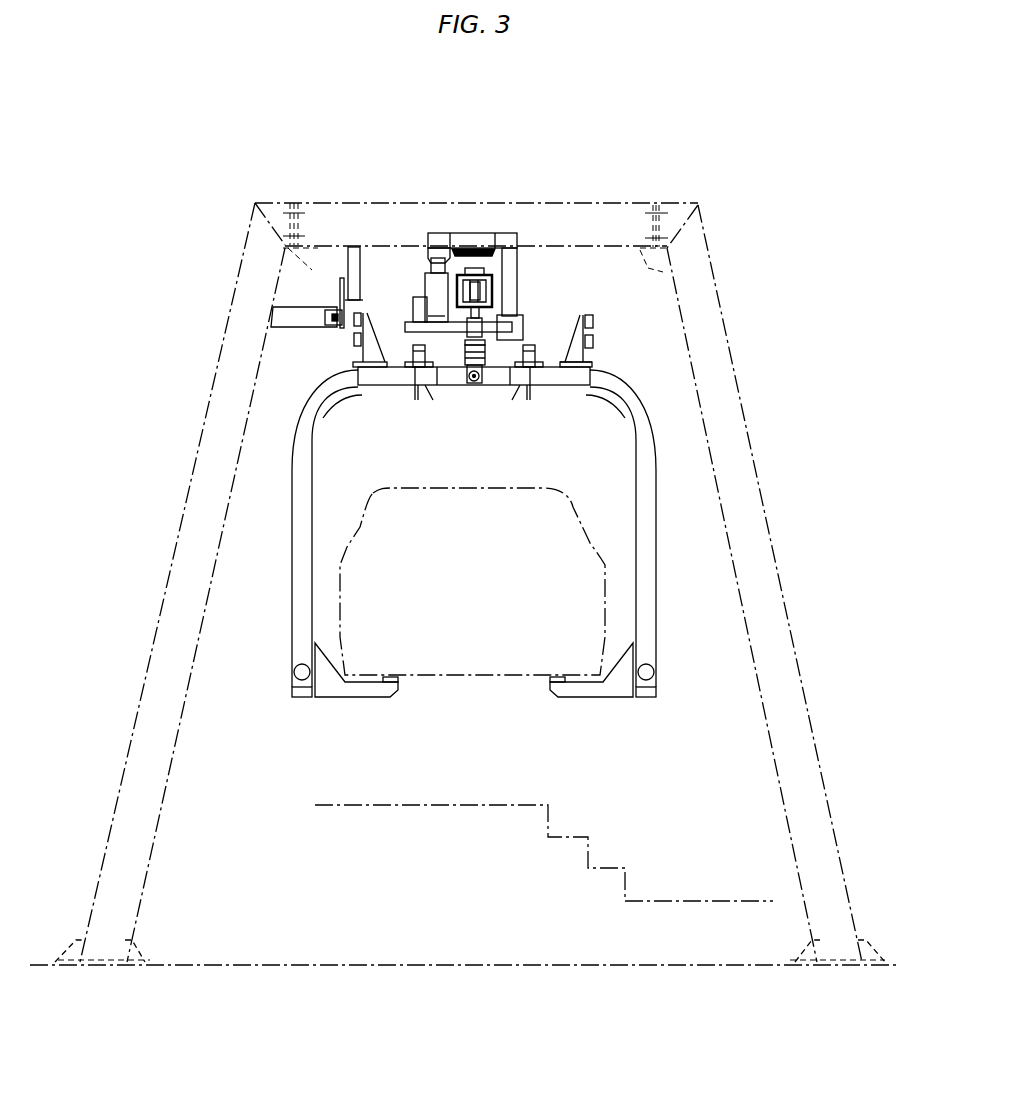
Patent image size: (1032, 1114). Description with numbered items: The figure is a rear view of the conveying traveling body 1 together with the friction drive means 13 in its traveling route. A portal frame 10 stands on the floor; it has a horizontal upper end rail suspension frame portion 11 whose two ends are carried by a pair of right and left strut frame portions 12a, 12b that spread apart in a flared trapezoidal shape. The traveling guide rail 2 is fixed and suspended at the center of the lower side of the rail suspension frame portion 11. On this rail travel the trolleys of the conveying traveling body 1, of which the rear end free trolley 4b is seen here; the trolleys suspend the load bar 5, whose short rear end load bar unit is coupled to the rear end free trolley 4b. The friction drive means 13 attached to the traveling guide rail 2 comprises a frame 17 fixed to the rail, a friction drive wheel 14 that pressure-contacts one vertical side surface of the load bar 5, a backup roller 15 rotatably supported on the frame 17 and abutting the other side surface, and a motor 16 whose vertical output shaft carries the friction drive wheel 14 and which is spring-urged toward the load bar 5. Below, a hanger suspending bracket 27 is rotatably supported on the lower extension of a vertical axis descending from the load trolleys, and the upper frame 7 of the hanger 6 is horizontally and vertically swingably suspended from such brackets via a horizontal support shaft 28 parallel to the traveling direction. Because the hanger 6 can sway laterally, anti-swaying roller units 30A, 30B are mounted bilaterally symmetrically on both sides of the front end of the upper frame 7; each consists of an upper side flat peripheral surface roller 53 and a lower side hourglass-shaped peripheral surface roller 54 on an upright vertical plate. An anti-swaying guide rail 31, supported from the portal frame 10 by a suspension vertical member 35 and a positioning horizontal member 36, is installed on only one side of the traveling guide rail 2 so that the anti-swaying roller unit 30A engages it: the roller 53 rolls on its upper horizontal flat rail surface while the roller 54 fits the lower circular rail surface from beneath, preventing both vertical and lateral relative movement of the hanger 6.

The portal frame 10 is at (596, 204).
The rail suspension frame portion 11 is at (538, 218).
The strut frame portion 12a is at (206, 418).
The strut frame portion 12b is at (748, 440).
The traveling guide rail 2 is at (427, 257).
The friction drive means 13 is at (478, 232).
The frame 17 is at (460, 237).
The motor 16 is at (430, 290).
The friction drive wheel 14 is at (415, 307).
The backup roller 15 is at (505, 309).
The rear end free trolley 4b is at (495, 283).
The conveying traveling body 1 is at (500, 294).
The hanger suspending bracket 27 is at (482, 368).
The horizontal support shaft 28 is at (474, 386).
The upper frame 7 is at (455, 385).
The anti-swaying roller unit 30A is at (352, 372).
The anti-swaying roller unit 30B is at (598, 318).
The upper side flat peripheral surface roller 53 is at (347, 328).
The lower side hourglass-shaped peripheral surface roller 54 is at (353, 355).
The load bar 5 is at (583, 358).
The suspension vertical member 35 is at (338, 265).
The positioning horizontal member 36 is at (305, 310).
The anti-swaying guide rail 31 is at (338, 318).
The hanger 6 is at (652, 596).